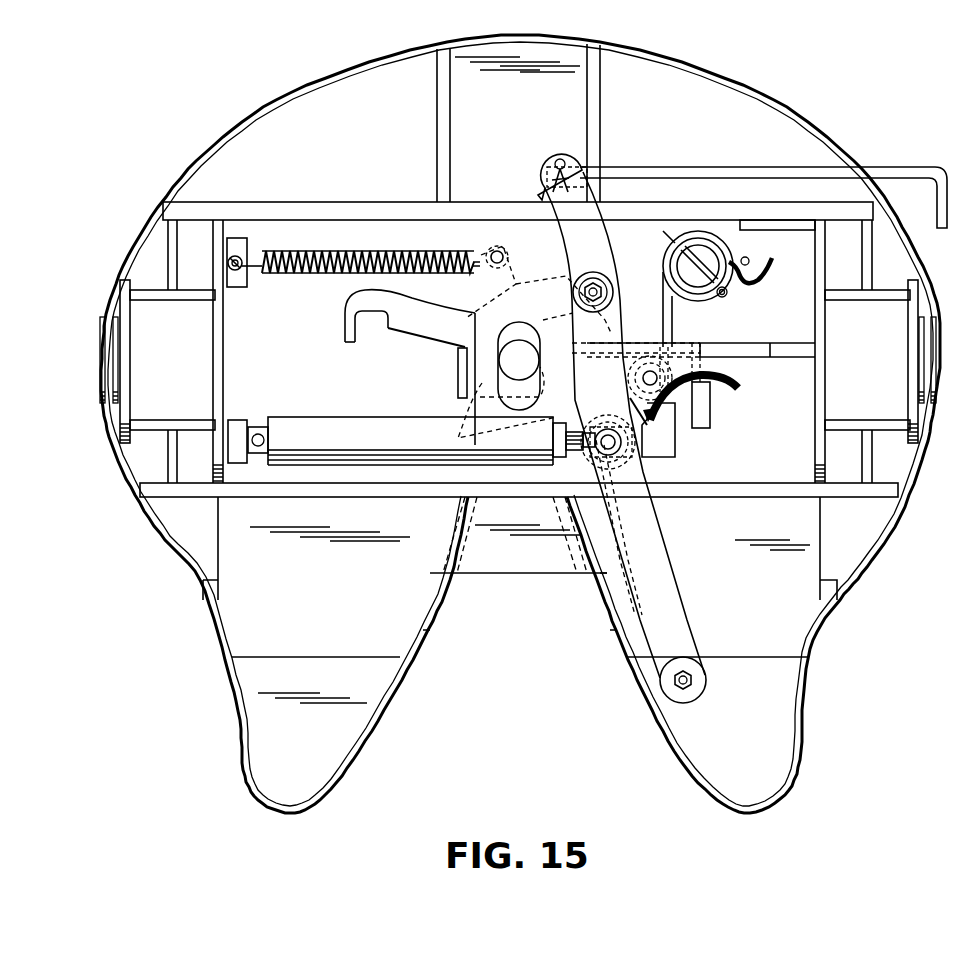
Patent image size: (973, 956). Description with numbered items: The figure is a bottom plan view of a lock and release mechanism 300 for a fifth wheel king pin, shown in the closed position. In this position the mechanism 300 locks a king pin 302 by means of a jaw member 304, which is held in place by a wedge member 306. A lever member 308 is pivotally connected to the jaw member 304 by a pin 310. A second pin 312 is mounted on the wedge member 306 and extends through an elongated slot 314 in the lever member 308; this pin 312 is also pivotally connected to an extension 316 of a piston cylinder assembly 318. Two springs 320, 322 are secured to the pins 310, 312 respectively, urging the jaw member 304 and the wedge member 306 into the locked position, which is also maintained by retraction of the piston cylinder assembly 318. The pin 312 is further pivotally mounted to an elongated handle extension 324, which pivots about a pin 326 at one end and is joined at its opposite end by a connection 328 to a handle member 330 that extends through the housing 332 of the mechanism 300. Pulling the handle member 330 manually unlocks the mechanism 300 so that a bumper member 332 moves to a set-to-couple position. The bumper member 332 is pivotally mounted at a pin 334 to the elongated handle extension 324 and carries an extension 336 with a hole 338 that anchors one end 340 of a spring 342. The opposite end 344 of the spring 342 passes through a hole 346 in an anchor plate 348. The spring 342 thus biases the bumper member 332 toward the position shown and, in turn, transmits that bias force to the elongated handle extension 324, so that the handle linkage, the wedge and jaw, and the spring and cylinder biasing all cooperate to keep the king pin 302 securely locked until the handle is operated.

The lock and release mechanism 300 is at (779, 72).
The king pin 302 is at (510, 360).
The jaw member 304 is at (497, 407).
The wedge member 306 is at (660, 443).
The lever member 308 is at (710, 400).
The pin 310 is at (651, 370).
The pin 312 is at (608, 428).
The elongated slot 314 is at (676, 430).
The extension 316 is at (557, 443).
The piston cylinder assembly 318 is at (293, 417).
The spring 320 is at (672, 310).
The spring 322 is at (648, 468).
The elongated handle extension 324 is at (683, 617).
The pin 326 is at (690, 682).
The connection 328 is at (550, 160).
The handle member 330 is at (698, 167).
The housing; bumper member 332 is at (405, 322).
The pin 334 is at (600, 283).
The extension 336 is at (490, 276).
The hole 338 is at (495, 250).
The end of spring 340 is at (476, 263).
The spring 342 is at (332, 250).
The opposite end of spring 344 is at (253, 266).
The hole 346 is at (227, 263).
The anchor plate 348 is at (236, 288).